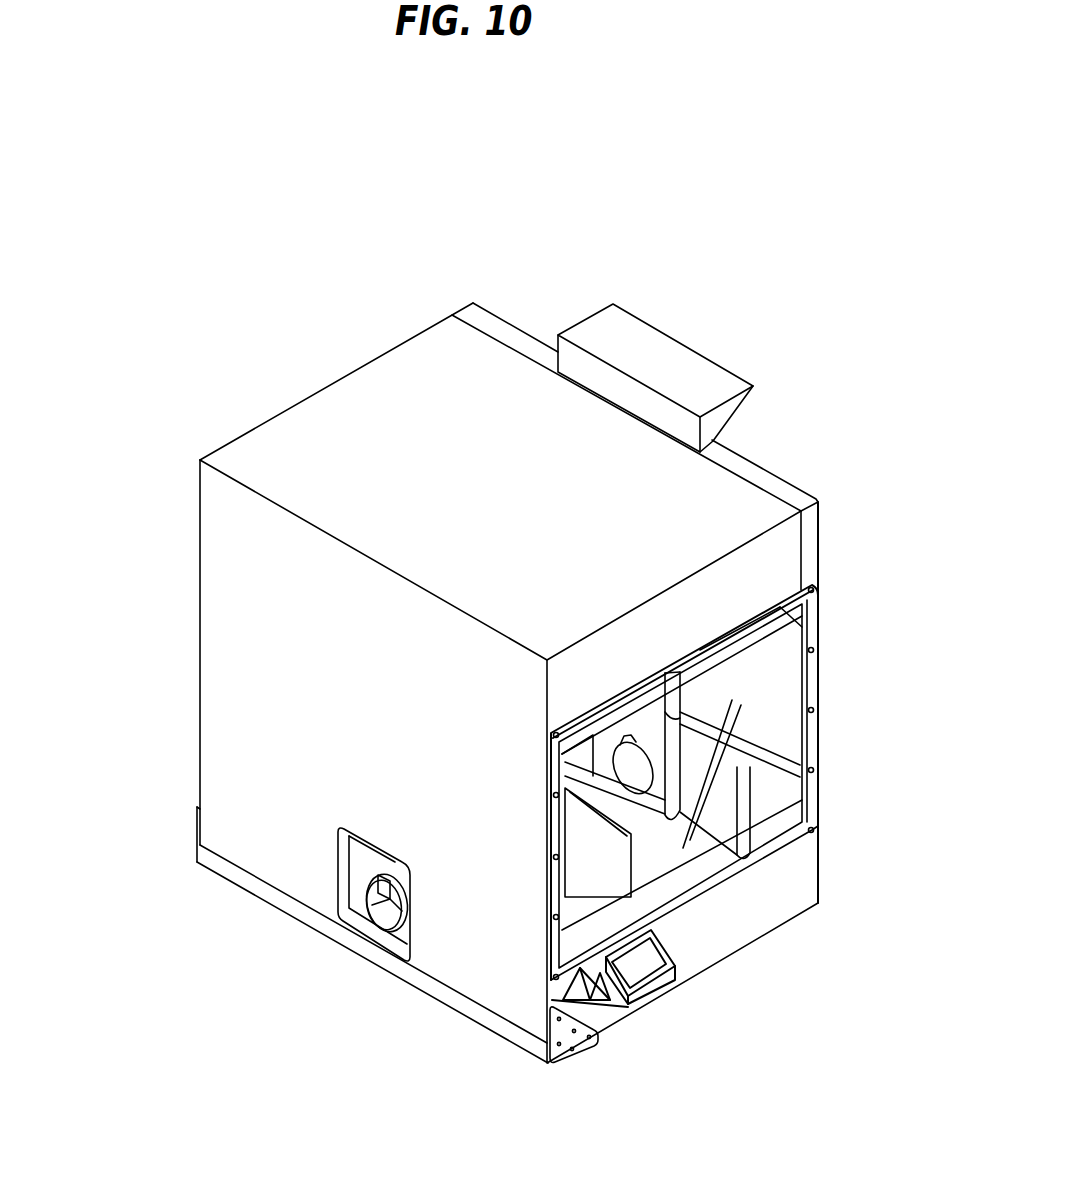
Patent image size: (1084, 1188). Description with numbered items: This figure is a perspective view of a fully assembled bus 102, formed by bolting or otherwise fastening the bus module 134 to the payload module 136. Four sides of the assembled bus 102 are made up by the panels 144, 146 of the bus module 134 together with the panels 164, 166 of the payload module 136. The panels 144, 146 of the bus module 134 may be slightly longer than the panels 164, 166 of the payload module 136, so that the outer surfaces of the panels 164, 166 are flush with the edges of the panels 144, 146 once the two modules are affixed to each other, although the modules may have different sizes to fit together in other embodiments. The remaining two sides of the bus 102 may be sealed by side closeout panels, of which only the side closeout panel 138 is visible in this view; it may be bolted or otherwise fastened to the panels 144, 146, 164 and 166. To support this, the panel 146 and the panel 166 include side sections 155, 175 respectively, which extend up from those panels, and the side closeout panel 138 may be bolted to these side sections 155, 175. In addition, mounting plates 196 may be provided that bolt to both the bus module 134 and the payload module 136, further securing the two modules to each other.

The bus 102 is at (860, 261).
The payload module 136 is at (126, 389).
The panel 166 is at (341, 378).
The panel 144 is at (779, 479).
The panel 164 is at (200, 646).
The side section 175 is at (787, 562).
The side closeout panel 138 is at (778, 743).
The side section 155 is at (797, 875).
The panel 146 is at (497, 1025).
The mounting plate 196 is at (197, 827).
The bus module 134 is at (880, 955).